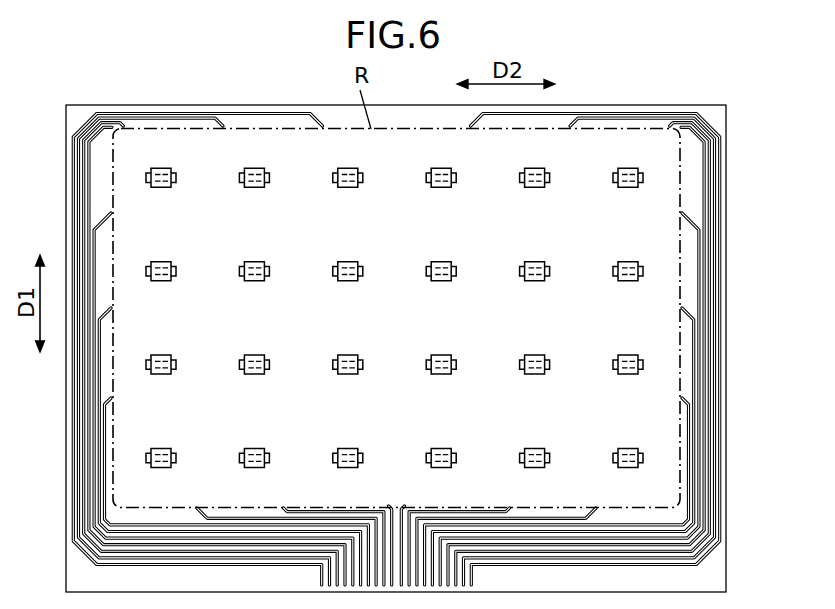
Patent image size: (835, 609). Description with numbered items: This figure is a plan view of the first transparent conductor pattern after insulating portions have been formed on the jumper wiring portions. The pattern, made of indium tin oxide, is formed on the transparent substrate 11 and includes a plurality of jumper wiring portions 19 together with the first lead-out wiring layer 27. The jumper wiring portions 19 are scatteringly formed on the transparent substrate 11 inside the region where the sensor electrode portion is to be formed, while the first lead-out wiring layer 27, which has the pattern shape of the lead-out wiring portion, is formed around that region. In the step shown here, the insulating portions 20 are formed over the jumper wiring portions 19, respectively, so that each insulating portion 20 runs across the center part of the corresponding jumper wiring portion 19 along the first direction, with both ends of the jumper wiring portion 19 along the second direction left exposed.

The transparent substrate 11 is at (727, 125).
The jumper wiring portion 19 is at (466, 267).
The insulating portion 20 is at (636, 168).
The first lead-out wiring layer 27 is at (717, 273).